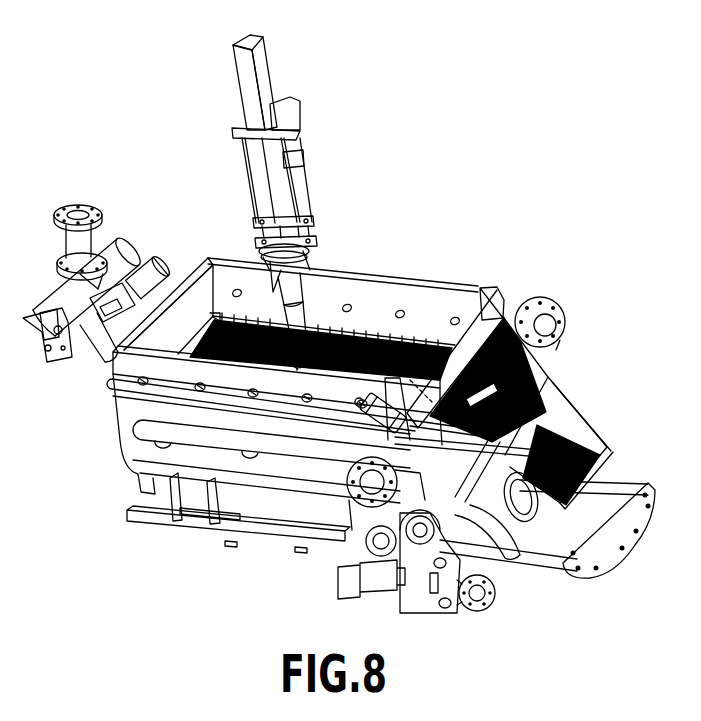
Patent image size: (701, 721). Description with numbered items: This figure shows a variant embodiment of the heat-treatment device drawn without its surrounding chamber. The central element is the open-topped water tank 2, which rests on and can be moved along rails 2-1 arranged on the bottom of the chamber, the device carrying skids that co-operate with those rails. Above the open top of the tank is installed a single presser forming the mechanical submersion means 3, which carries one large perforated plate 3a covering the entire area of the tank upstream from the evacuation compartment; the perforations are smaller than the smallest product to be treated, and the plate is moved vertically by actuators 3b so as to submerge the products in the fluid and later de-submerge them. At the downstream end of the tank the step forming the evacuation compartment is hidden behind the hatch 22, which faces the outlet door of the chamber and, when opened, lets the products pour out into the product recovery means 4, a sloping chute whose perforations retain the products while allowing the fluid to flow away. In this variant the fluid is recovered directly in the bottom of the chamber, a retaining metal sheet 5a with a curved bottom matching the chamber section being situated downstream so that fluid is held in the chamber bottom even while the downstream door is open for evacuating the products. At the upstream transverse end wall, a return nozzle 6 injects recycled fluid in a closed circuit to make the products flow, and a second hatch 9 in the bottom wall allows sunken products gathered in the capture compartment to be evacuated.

The water tank 2 is at (417, 281).
The rails 2-1 is at (158, 521).
The mechanical submersion means 3 is at (392, 240).
The perforated plate 3a is at (360, 330).
The actuators 3b is at (314, 212).
The product recovery means 4 is at (546, 377).
The retaining metal sheet 5a is at (613, 549).
The return nozzle 6 is at (100, 368).
The second hatch 9 is at (512, 563).
The hatch 22 is at (503, 312).